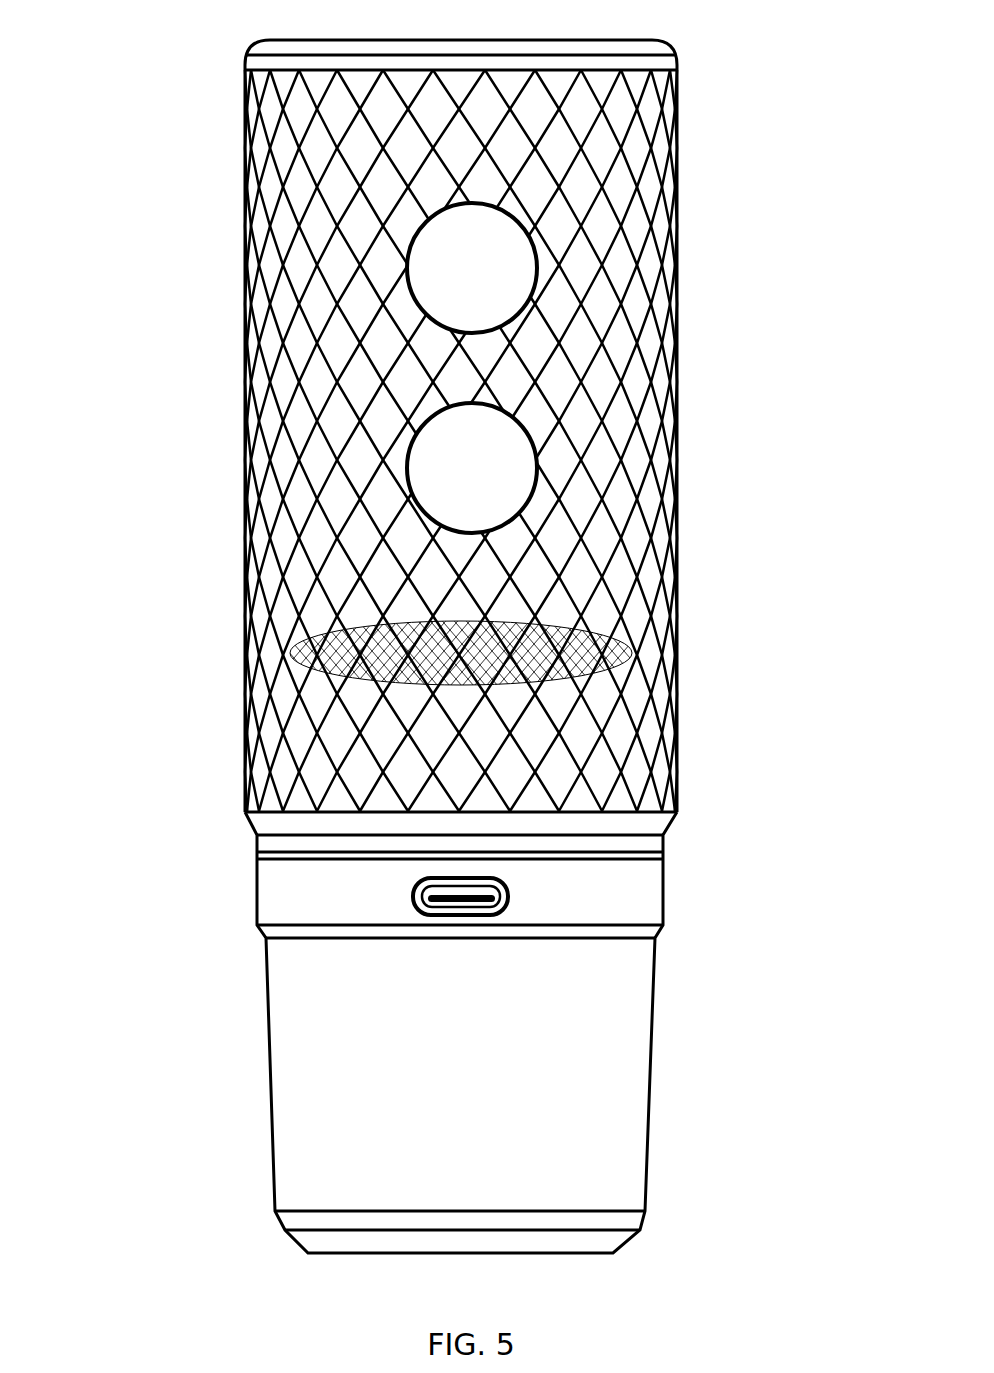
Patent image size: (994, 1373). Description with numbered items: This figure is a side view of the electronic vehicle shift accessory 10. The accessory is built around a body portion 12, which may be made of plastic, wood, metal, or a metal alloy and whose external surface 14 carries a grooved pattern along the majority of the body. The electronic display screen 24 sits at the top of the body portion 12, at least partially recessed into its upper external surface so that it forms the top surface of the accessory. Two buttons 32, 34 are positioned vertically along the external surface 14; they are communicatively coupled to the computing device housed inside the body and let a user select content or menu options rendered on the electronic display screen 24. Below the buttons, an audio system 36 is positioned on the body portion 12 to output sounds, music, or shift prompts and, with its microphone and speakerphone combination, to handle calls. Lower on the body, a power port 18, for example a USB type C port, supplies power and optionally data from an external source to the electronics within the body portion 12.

The electronic vehicle shift accessory 10 is at (23, 6).
The body portion 12 is at (806, 151).
The external surface 14 is at (682, 170).
The power port 18 is at (510, 898).
The electronic display screen 24 is at (665, 50).
The button 32 is at (472, 268).
The button 34 is at (472, 468).
The audio system 36 is at (634, 651).